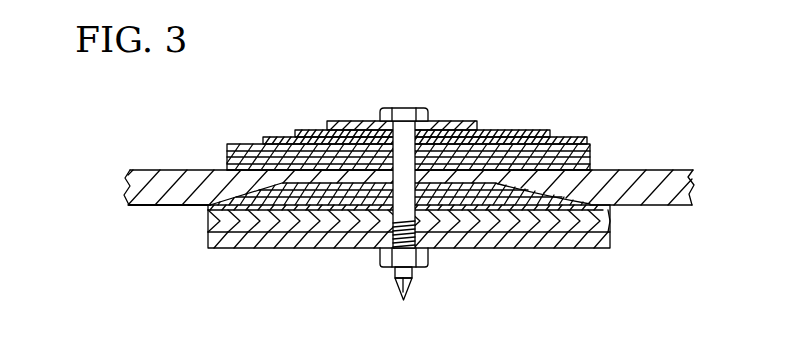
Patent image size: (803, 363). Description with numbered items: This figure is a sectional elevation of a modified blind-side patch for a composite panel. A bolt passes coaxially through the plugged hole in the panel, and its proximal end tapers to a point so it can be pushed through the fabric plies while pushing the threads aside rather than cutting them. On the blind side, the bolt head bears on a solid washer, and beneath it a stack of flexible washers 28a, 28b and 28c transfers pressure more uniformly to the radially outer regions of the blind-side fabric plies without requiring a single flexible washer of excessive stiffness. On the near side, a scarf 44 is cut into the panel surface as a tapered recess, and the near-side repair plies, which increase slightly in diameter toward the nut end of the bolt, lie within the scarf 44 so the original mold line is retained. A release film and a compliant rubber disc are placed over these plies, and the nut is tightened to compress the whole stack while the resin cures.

The flexible washer 28a is at (540, 138).
The flexible washer 28b is at (552, 142).
The flexible washer 28c is at (583, 150).
The scarf 44 is at (268, 188).